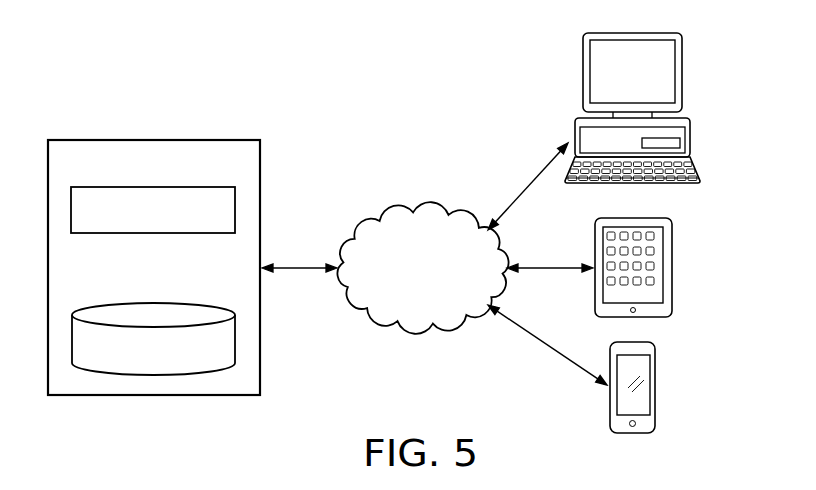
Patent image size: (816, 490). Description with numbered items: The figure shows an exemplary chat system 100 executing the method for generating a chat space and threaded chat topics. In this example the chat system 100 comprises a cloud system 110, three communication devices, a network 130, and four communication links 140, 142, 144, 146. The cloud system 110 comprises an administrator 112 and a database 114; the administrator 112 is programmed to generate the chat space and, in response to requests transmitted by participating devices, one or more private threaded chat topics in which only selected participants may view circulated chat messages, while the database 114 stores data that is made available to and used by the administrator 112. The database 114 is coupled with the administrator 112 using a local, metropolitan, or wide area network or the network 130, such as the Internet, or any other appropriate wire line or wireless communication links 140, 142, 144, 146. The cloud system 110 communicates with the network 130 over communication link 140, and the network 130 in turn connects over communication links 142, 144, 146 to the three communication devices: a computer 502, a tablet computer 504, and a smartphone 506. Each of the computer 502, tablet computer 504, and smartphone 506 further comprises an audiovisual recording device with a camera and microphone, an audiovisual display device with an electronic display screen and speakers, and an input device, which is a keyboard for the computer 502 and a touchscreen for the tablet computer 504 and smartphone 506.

The chat system 100 is at (295, 82).
The cloud system 110 is at (155, 140).
The administrator 112 is at (128, 233).
The database 114 is at (177, 303).
The network 130 is at (387, 213).
The communication link 140 is at (307, 267).
The communication link 142 is at (532, 183).
The communication link 144 is at (543, 266).
The communication link 146 is at (548, 350).
The computer 502 is at (692, 138).
The tablet computer 504 is at (672, 255).
The smartphone 506 is at (655, 397).